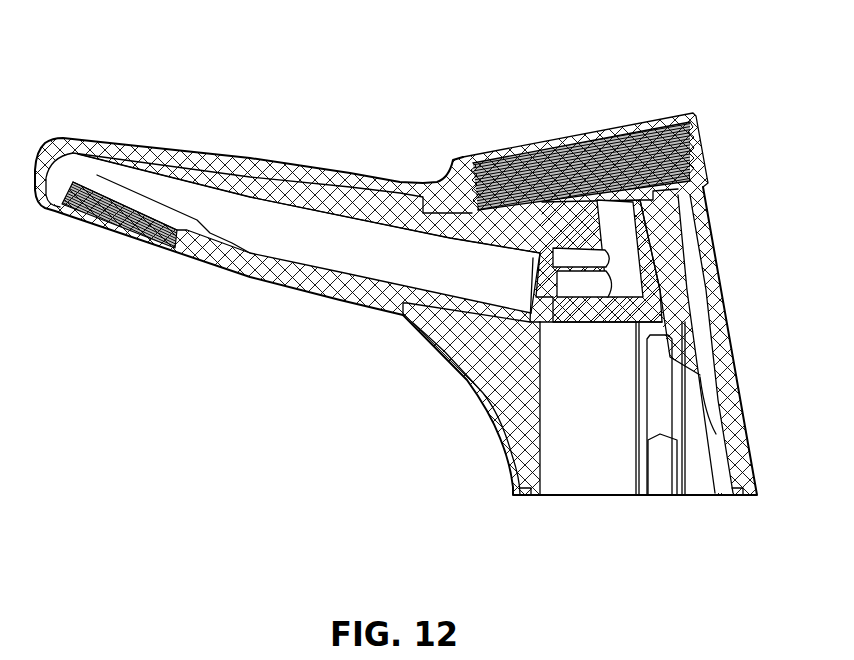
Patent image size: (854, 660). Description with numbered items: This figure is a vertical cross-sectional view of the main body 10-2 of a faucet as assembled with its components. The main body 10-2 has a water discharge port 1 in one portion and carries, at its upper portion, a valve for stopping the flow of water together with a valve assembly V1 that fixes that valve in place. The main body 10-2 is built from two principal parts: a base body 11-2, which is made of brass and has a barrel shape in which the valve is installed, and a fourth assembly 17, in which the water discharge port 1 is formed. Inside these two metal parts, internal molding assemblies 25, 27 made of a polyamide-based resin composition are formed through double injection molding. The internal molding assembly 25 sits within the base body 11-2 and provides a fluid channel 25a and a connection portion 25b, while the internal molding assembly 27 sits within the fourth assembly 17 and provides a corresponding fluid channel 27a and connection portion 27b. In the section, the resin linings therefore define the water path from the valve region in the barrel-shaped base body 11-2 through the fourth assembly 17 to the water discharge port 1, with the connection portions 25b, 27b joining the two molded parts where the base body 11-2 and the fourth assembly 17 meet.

The main body of a faucet 10-2 is at (228, 32).
The fourth assembly 17 is at (234, 155).
The internal molding assembly 27 is at (339, 196).
The valve assembly V1 is at (560, 210).
The water discharge port 1 is at (95, 227).
The connection portion 27b is at (258, 232).
The fluid channel 27a is at (410, 318).
The connection portion 25b is at (437, 347).
The base body 11-2 is at (492, 393).
The internal molding assembly 25 is at (487, 456).
The fluid channel 25a is at (600, 414).